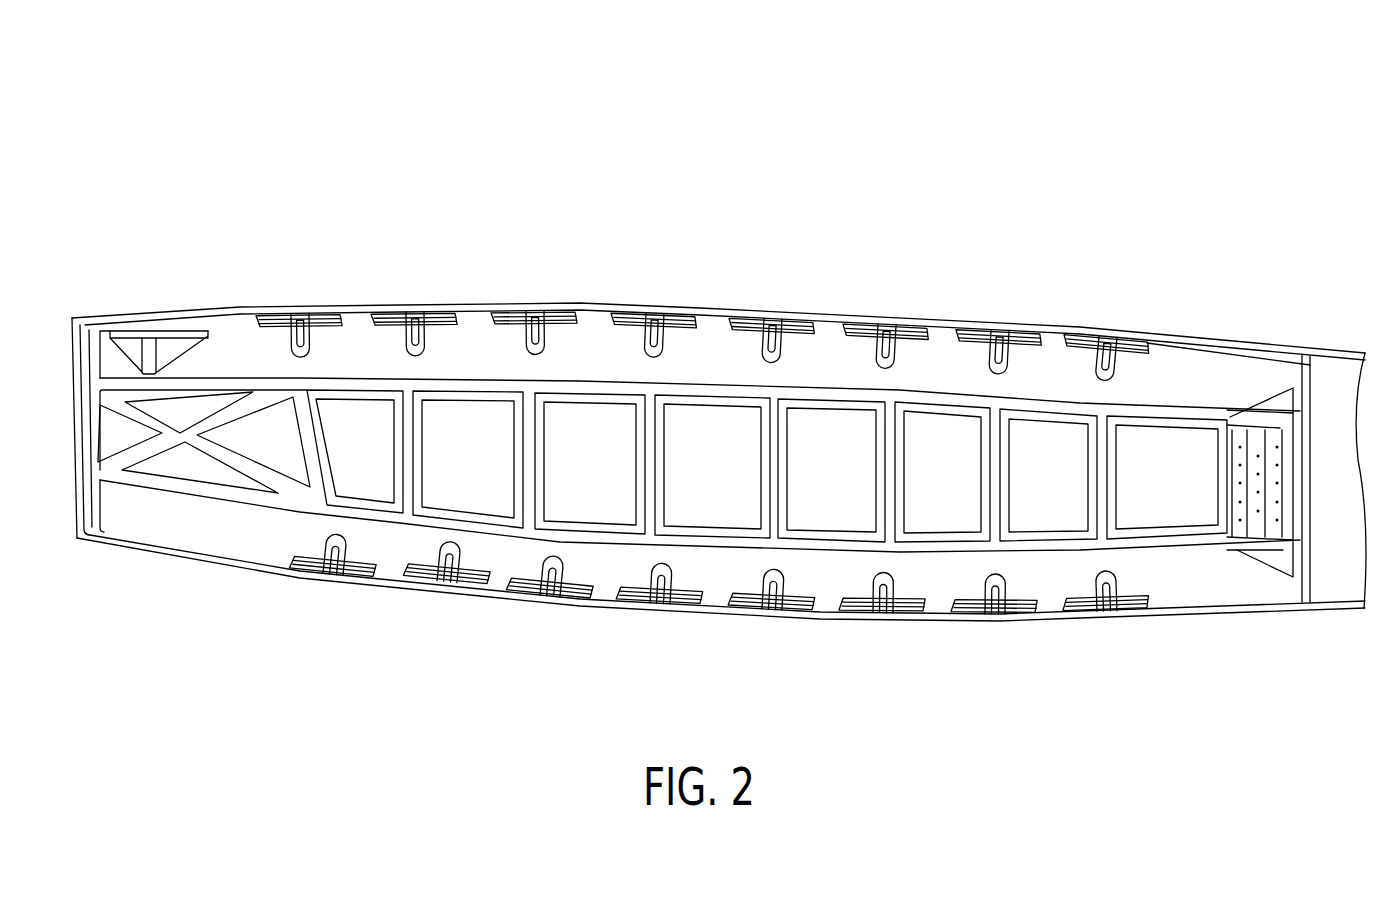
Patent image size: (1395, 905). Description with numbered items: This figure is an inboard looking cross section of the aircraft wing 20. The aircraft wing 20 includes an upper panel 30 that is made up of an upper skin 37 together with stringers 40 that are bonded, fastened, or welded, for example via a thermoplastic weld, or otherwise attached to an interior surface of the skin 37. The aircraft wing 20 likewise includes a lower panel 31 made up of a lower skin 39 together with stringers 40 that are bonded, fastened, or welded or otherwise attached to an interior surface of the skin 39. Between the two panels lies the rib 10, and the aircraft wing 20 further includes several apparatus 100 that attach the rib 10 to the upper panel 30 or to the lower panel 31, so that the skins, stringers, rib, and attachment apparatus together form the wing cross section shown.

The rib 10 is at (724, 472).
The aircraft wing 20 is at (207, 123).
The panel 30 is at (1077, 285).
The panel 31 is at (884, 652).
The skin 37 is at (1236, 347).
The skin 39 is at (1207, 613).
The stringers 40 is at (300, 316).
The apparatus 100 is at (405, 318).